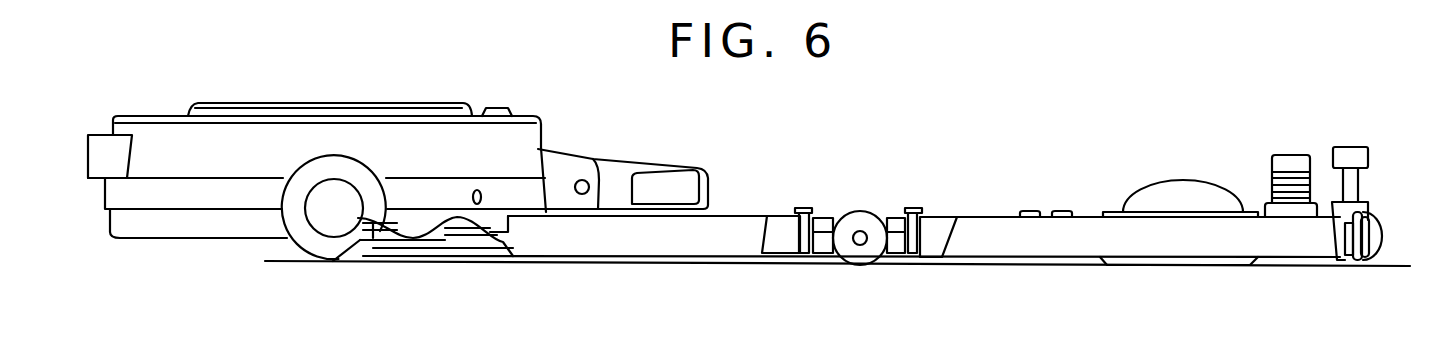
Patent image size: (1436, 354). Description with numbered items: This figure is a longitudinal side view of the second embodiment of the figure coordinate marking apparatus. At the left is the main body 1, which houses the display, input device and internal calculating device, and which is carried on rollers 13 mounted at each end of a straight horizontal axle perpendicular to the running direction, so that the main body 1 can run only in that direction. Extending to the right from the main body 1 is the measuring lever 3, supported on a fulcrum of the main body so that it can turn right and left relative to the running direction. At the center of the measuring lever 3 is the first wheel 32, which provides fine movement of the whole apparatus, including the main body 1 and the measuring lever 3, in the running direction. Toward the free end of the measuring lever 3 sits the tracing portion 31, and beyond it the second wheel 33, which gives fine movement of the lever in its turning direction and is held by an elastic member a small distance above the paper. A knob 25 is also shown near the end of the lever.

The main body 1 is at (543, 148).
The rollers 13 is at (295, 245).
The measuring lever 3 is at (985, 216).
The first wheel 32 is at (858, 210).
The tracing portion 31 is at (1168, 184).
The knob 25 is at (1346, 146).
The second wheel 33 is at (1372, 220).